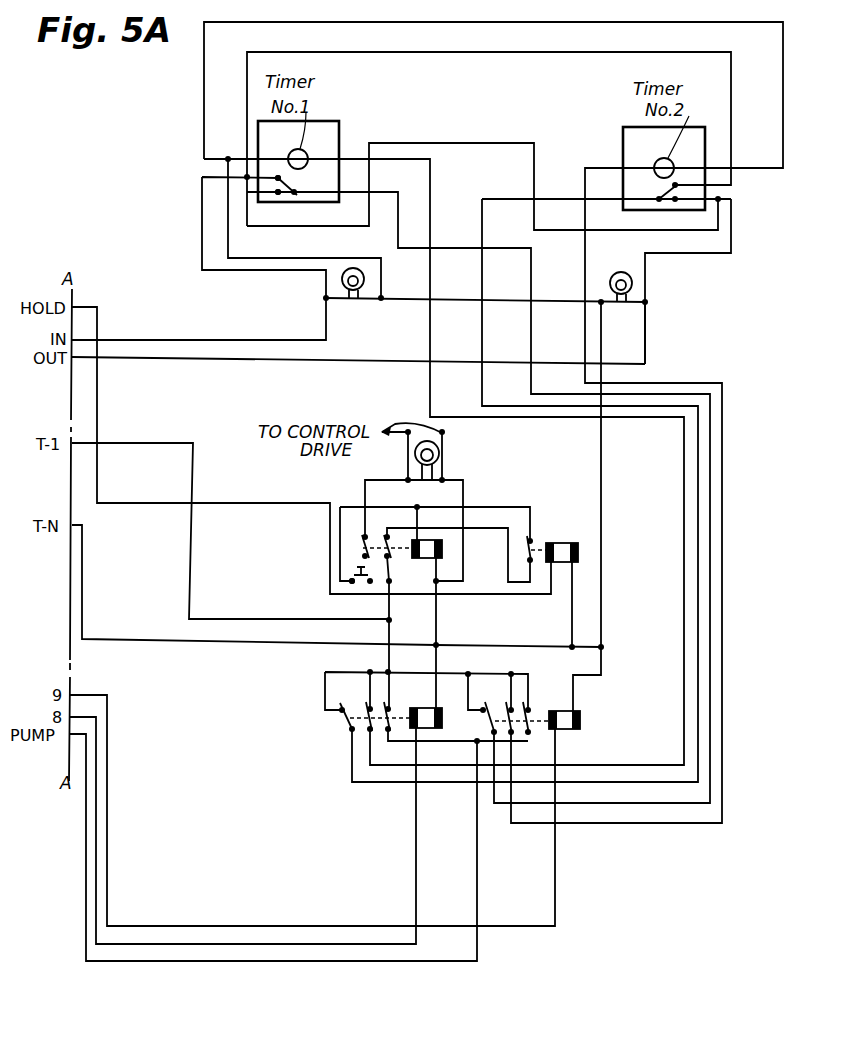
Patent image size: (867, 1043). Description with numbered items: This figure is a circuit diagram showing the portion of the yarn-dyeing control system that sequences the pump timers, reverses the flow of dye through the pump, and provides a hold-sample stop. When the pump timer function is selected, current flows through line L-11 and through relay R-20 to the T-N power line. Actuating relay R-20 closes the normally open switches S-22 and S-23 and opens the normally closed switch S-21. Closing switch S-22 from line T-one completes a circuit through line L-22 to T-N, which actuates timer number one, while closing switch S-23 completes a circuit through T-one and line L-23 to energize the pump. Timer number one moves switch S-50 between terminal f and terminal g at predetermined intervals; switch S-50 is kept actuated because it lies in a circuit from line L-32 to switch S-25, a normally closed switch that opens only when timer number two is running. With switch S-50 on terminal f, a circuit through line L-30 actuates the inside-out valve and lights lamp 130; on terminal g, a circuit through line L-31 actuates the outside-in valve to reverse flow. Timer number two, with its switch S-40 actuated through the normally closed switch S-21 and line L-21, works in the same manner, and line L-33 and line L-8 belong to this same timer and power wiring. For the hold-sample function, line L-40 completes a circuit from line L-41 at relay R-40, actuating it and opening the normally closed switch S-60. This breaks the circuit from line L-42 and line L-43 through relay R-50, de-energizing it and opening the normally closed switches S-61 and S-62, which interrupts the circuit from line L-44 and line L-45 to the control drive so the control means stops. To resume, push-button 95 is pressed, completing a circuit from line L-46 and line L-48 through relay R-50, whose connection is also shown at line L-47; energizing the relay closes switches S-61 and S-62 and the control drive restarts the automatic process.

The line L-40 is at (90, 304).
The line L-30 is at (290, 272).
The line L-31 is at (662, 255).
The line L-33 is at (308, 258).
The line L-8 is at (155, 443).
The line L-21 is at (578, 197).
The line L-22 is at (467, 418).
The line L-32 is at (562, 394).
The line L-41 is at (574, 597).
The line L-42 is at (492, 507).
The line L-43 is at (508, 527).
The line L-44 is at (365, 490).
The line L-45 is at (452, 478).
The line L-46 is at (388, 603).
The line L-47 is at (438, 622).
The line L-48 is at (340, 535).
The line L-23 is at (520, 742).
The line L-11 is at (360, 946).
The switch S-50 is at (297, 198).
The terminal f is at (278, 176).
The terminal g is at (276, 193).
The switch S-40 is at (667, 203).
The lamp 130 is at (365, 278).
The switch S-61 is at (360, 543).
The switch S-62 is at (393, 535).
The push-button 95 is at (350, 573).
The relay R-50 is at (423, 556).
The switch S-60 is at (518, 583).
The relay R-40 is at (568, 526).
The switch S-21 is at (350, 717).
The switch S-22 is at (370, 728).
The switch S-23 is at (383, 740).
The relay R-20 is at (430, 720).
The switch S-25 is at (484, 703).